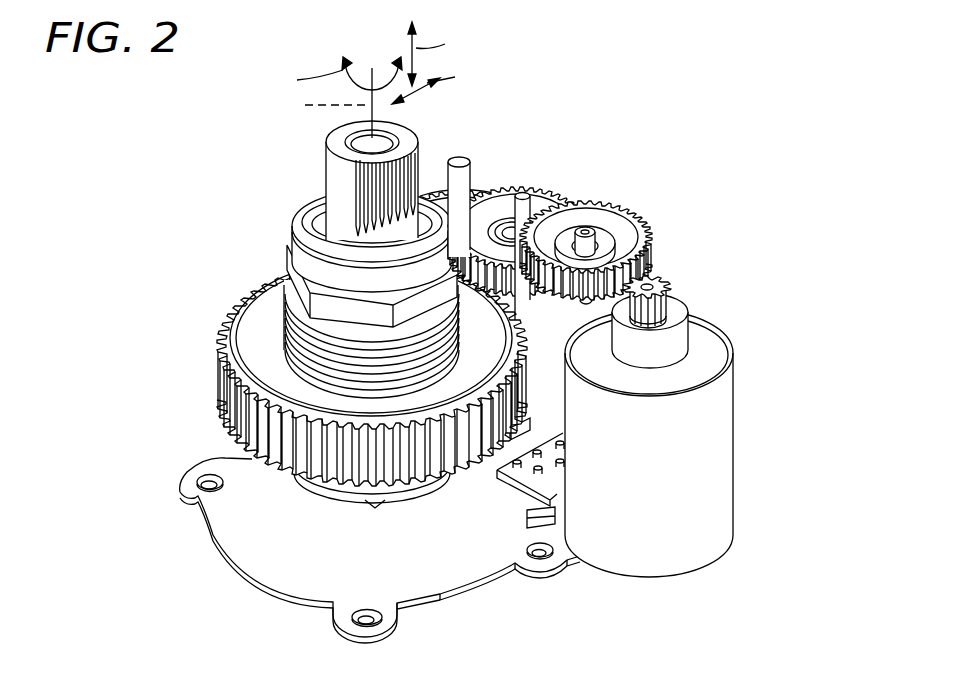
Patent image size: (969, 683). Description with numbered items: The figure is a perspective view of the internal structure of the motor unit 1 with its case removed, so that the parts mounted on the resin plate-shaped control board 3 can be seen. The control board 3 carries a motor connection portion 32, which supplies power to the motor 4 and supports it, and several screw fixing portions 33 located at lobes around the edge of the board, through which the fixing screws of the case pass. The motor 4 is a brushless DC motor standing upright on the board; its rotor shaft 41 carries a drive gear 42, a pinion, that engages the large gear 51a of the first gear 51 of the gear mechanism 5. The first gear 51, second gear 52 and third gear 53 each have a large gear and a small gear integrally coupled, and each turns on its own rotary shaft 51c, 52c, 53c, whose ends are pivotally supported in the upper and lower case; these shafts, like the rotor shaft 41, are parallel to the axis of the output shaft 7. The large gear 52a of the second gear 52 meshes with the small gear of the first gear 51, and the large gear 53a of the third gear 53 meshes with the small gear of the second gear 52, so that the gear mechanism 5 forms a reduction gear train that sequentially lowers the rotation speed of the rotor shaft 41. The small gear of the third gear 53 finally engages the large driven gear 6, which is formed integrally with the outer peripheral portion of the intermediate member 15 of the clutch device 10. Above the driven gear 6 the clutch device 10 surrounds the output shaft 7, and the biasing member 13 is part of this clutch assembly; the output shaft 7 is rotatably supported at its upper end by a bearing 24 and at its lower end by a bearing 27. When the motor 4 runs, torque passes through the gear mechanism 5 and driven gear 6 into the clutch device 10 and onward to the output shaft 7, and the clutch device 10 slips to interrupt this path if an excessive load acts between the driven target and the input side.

The motor unit 1 is at (581, 124).
The control board 3 is at (462, 596).
The motor 4 is at (686, 415).
The gear mechanism 5 is at (462, 185).
The driven gear 6 is at (338, 368).
The output shaft 7 is at (327, 170).
The clutch device 10 is at (276, 264).
The biasing member 13 is at (283, 352).
The intermediate member 15 is at (268, 325).
The bearing 24 is at (300, 213).
The bearing 27 is at (335, 500).
The motor connection portion 32 is at (506, 476).
The screw fixing portions 33 is at (183, 490).
The rotor shaft 41 is at (662, 288).
The drive gear 42 is at (672, 305).
The first gear 51 is at (621, 236).
The large gear 51a is at (636, 218).
The rotary shaft 51c is at (585, 233).
The second gear 52 is at (523, 209).
The large gear 52a is at (521, 196).
The rotary shaft 52c is at (524, 190).
The third gear 53 is at (462, 185).
The large gear 53a is at (481, 180).
The rotary shaft 53c is at (455, 160).